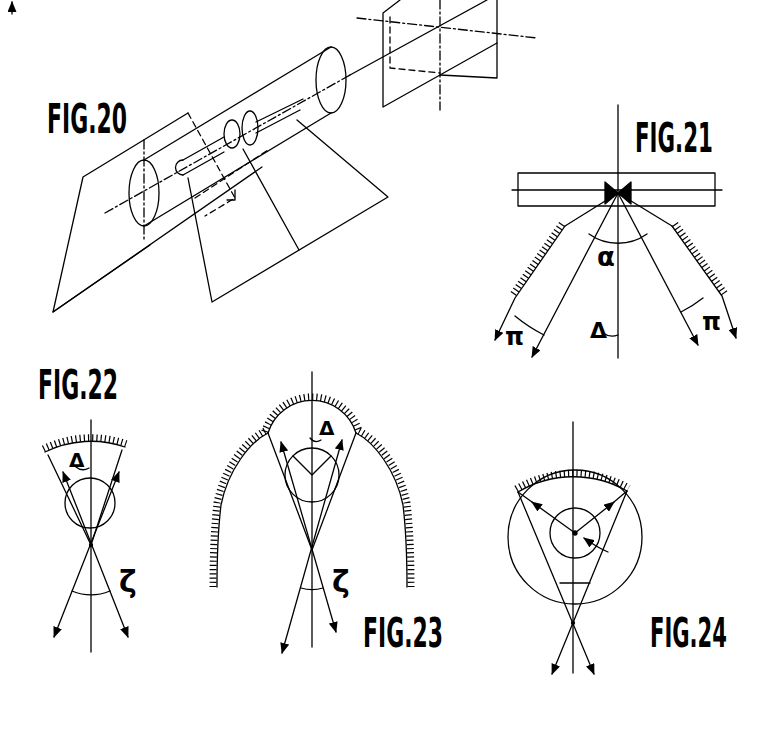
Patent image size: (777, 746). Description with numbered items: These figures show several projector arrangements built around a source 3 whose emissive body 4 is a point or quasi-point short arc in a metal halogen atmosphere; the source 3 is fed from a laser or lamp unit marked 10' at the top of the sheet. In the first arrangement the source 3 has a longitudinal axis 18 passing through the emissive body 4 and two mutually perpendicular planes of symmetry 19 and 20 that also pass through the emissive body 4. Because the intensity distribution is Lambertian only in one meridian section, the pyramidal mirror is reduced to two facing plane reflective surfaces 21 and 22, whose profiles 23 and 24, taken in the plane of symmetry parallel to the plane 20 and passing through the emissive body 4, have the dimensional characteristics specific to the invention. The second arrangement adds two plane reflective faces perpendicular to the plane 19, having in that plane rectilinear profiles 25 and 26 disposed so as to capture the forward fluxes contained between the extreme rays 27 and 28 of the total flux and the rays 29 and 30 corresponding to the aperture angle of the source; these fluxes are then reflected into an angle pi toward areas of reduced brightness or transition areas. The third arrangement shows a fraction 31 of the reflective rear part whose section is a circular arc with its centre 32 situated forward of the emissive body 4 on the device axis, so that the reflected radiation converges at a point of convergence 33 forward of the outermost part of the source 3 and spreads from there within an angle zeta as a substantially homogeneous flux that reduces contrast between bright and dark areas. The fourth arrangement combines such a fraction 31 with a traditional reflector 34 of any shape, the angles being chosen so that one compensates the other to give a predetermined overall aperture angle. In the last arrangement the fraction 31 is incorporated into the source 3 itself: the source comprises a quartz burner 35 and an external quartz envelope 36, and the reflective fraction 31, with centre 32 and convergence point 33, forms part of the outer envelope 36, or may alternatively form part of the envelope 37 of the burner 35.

In FIG. 20, the laser light source 10' is at (28, 10).
In FIG. 20, the source 3 is at (312, 80).
In FIG. 22, the source 3 is at (109, 507).
In FIG. 23, the source 3 is at (300, 482).
In FIG. 24, the source 3 is at (543, 572).
In FIG. 20, the emissive body 4 is at (238, 124).
In FIG. 22, the emissive body 4 is at (85, 515).
In FIG. 24, the emissive body 4 is at (553, 544).
In FIG. 20, the longitudinal axis 18 is at (372, 66).
In FIG. 20, the plane of symmetry 19 is at (391, 90).
In FIG. 21, the plane of symmetry 19 is at (617, 266).
In FIG. 20, the plane of symmetry 20 is at (486, 67).
In FIG. 20, the plane reflective surface 21 is at (331, 200).
In FIG. 20, the plane reflective surface 22 is at (85, 255).
In FIG. 20, the profile 23 is at (296, 250).
In FIG. 20, the profile 24 is at (137, 252).
In FIG. 21, the rectilinear profile 25 is at (700, 258).
In FIG. 21, the rectilinear profile 26 is at (540, 263).
In FIG. 21, the extreme ray 27 is at (667, 217).
In FIG. 21, the extreme ray 28 is at (572, 217).
In FIG. 21, the ray 29 is at (662, 244).
In FIG. 21, the ray 30 is at (564, 247).
In FIG. 22, the fraction of rear part 31 is at (108, 437).
In FIG. 23, the fraction of rear part 31 is at (344, 418).
In FIG. 24, the fraction of rear part 31 is at (612, 480).
In FIG. 22, the centre 32 is at (97, 521).
In FIG. 24, the centre 32 is at (576, 580).
In FIG. 22, the point of convergence 33 is at (87, 548).
In FIG. 24, the point of convergence 33 is at (583, 626).
In FIG. 23, the reflector 34 is at (232, 468).
In FIG. 24, the burner 35 is at (608, 553).
In FIG. 24, the external envelope 36 is at (643, 537).
In FIG. 24, the envelope of the burner 37 is at (563, 508).